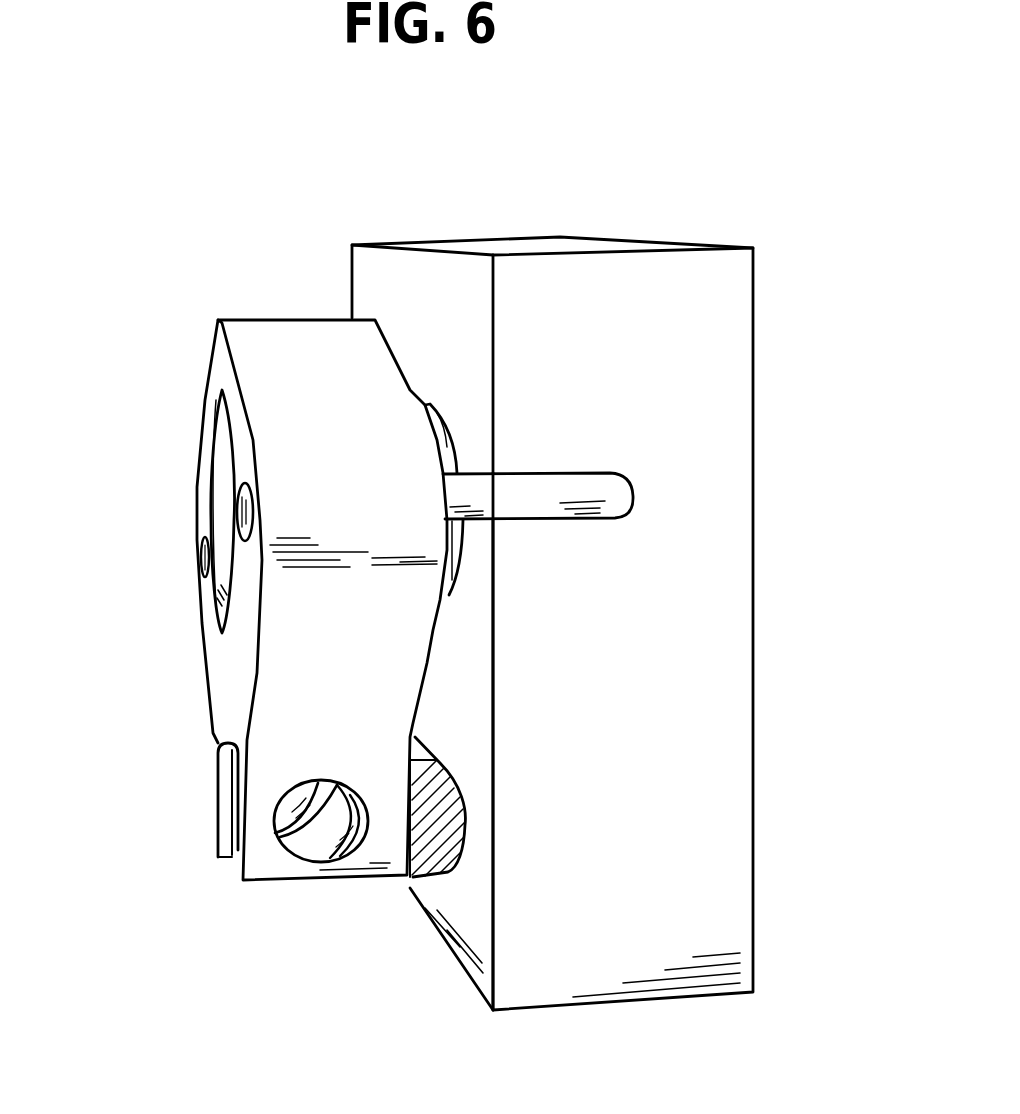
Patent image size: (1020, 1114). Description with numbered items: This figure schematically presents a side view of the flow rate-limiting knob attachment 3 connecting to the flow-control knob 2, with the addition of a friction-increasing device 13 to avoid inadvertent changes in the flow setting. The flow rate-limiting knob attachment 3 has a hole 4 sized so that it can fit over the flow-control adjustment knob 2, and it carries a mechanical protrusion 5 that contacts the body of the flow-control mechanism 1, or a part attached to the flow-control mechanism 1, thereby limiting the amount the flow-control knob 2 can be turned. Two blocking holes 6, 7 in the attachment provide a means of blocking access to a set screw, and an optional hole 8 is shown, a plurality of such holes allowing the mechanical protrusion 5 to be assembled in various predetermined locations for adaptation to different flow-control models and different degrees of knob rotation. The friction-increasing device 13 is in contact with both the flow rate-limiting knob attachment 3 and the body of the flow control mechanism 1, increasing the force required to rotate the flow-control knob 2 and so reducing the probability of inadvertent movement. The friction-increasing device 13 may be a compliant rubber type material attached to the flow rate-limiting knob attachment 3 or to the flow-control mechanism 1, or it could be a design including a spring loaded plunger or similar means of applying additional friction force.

The flow-control mechanism 1 is at (753, 373).
The flow-control adjustment knob 2 is at (223, 493).
The flow rate-limiting knob attachment 3 is at (213, 773).
The hole 4 is at (213, 622).
The mechanical protrusion 5 is at (580, 518).
The blocking hole 6 is at (298, 836).
The blocking hole 7 is at (352, 850).
The optional hole 8 is at (197, 555).
The friction-increasing device 13 is at (423, 853).